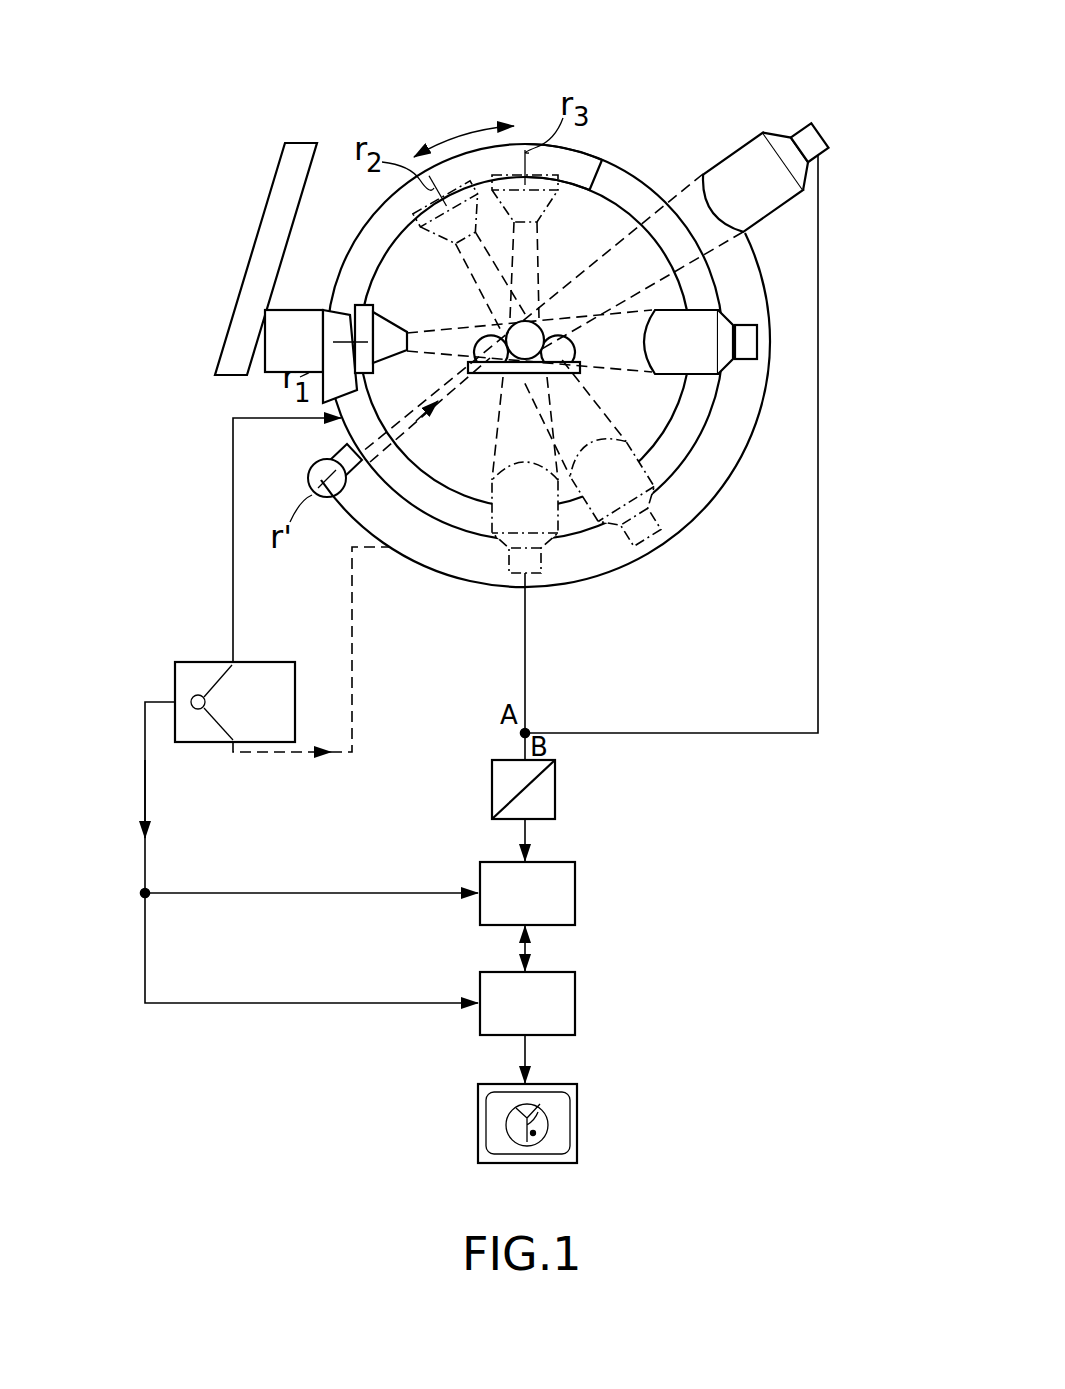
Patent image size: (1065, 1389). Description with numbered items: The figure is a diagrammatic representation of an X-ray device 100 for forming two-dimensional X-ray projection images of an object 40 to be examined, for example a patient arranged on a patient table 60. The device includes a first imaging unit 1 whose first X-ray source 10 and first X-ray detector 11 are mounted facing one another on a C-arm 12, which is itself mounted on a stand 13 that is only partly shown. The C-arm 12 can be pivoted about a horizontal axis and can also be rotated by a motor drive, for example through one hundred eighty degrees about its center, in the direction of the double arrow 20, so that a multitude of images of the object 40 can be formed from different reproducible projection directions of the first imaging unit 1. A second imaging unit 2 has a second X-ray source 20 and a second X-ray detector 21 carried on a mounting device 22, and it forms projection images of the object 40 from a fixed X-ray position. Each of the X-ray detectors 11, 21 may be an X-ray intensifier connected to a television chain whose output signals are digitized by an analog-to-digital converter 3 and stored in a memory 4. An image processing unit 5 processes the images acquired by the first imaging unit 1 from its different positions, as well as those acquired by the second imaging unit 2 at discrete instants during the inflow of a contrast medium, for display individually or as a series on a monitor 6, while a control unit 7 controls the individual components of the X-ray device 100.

The X-ray device 100 is at (354, 88).
The first imaging unit 1 is at (764, 312).
The second imaging unit 2 is at (797, 106).
The analog-to-digital converter 3 is at (556, 790).
The memory 4 is at (576, 898).
The image processing unit 5 is at (576, 1003).
The monitor 6 is at (578, 1127).
The control unit 7 is at (205, 744).
The first X-ray source 10 is at (388, 328).
The first X-ray detector 11 is at (692, 306).
The C-arm 12 is at (600, 172).
The stand 13 is at (277, 193).
The second X-ray source 20 is at (463, 134).
The second X-ray detector 21 is at (733, 150).
The mounting device 22 is at (723, 492).
The object to be examined 40 is at (553, 326).
The patient table 60 is at (485, 376).